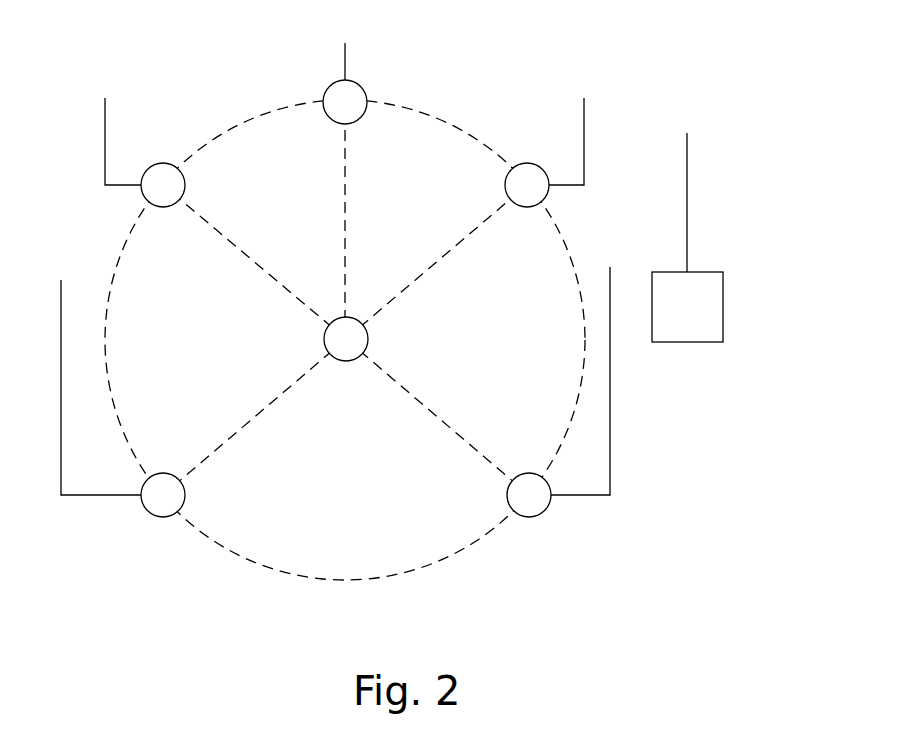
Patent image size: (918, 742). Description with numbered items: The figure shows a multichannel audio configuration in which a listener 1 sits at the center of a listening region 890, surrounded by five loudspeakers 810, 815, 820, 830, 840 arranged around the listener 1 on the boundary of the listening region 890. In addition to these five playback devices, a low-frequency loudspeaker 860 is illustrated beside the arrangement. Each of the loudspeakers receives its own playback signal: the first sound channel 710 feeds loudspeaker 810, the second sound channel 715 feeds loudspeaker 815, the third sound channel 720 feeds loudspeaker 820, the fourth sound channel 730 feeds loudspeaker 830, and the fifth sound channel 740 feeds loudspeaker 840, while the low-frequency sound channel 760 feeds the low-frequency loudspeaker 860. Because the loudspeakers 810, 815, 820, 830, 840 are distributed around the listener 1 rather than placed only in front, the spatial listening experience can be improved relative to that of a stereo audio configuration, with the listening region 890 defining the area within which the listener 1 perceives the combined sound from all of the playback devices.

The listener 1 is at (382, 348).
The first sound channel 710 is at (157, 130).
The second sound channel 715 is at (389, 51).
The third sound channel 720 is at (557, 131).
The fourth sound channel 730 is at (103, 374).
The fifth sound channel 740 is at (629, 368).
The low-frequency sound channel 760 is at (726, 186).
The loudspeaker 810 is at (211, 180).
The loudspeaker 815 is at (381, 130).
The loudspeaker 820 is at (511, 224).
The loudspeaker 830 is at (212, 489).
The loudspeaker 840 is at (557, 528).
The low-frequency loudspeaker 860 is at (702, 341).
The listening region 890 is at (345, 372).